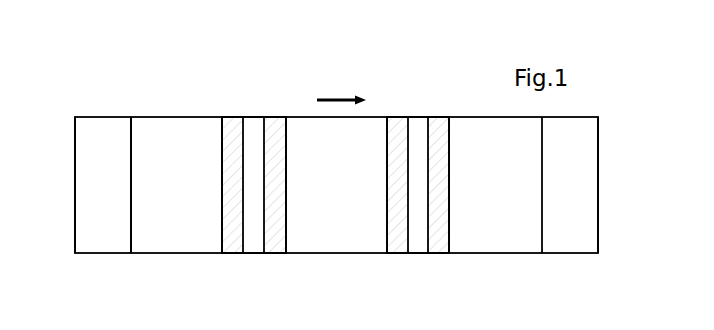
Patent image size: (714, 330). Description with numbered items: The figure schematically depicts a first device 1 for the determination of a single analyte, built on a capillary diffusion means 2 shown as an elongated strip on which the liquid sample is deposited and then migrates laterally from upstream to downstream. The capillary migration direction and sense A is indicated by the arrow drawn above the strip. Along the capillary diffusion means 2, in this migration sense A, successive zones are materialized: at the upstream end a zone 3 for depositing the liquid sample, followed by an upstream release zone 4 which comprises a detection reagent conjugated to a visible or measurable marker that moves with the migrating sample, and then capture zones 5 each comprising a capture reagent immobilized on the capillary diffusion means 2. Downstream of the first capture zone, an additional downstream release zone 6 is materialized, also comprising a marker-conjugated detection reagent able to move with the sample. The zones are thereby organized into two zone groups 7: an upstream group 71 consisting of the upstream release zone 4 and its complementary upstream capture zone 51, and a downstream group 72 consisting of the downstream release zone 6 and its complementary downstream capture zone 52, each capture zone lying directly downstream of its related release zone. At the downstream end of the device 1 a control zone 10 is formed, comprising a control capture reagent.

The device 1 is at (146, 268).
The capillary diffusion means 2 is at (180, 118).
The zone for depositing the liquid sample 3 is at (85, 186).
The upstream release zone 4 is at (233, 253).
The capture zones 5 is at (370, 209).
The upstream capture zone 51 is at (275, 253).
The downstream capture zone 52 is at (438, 253).
The additional downstream release zone 6 is at (397, 253).
The zone groups 7 is at (339, 149).
The upstream group 71 is at (250, 108).
The downstream group 72 is at (427, 110).
The control zone 10 is at (598, 198).
The capillary migration direction and sense A is at (340, 97).